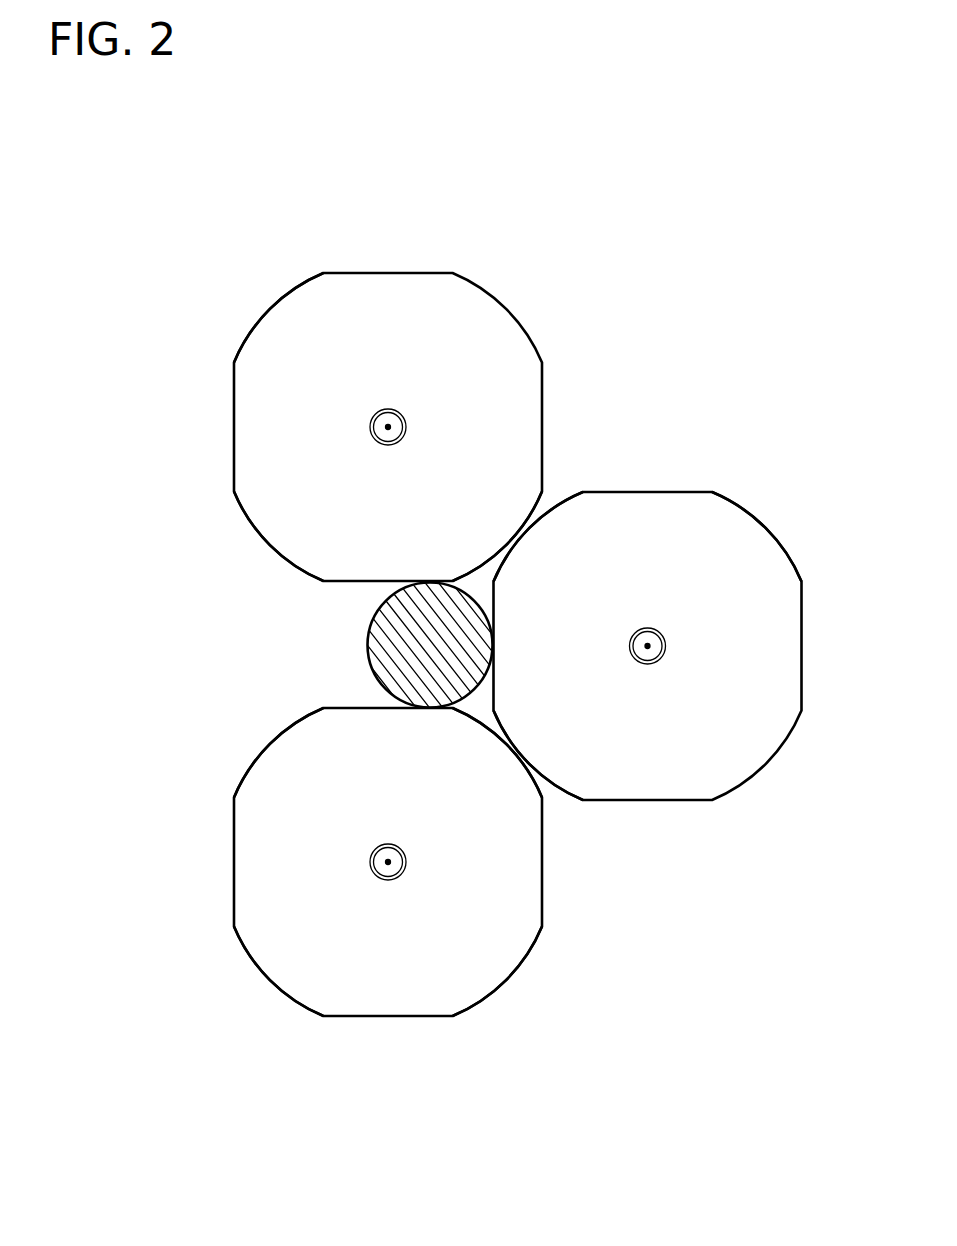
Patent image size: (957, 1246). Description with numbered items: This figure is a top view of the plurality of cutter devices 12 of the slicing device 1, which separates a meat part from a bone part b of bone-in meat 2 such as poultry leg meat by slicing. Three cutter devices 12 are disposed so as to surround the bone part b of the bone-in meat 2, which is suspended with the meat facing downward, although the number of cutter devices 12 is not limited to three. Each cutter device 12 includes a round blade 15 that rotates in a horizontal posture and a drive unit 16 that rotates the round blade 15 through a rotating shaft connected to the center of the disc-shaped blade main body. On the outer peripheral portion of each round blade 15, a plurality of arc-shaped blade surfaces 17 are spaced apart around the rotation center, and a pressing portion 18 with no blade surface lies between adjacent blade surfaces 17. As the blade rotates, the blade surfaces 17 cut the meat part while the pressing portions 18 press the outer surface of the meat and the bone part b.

The slicing device 1 is at (752, 183).
The bone-in meat 2 is at (366, 627).
The bone part b is at (365, 650).
The cutter device 12 is at (478, 260).
The round blade 15 is at (244, 341).
The drive unit 16 is at (402, 417).
The blade surface 17 is at (525, 540).
The pressing portion 18 is at (371, 583).